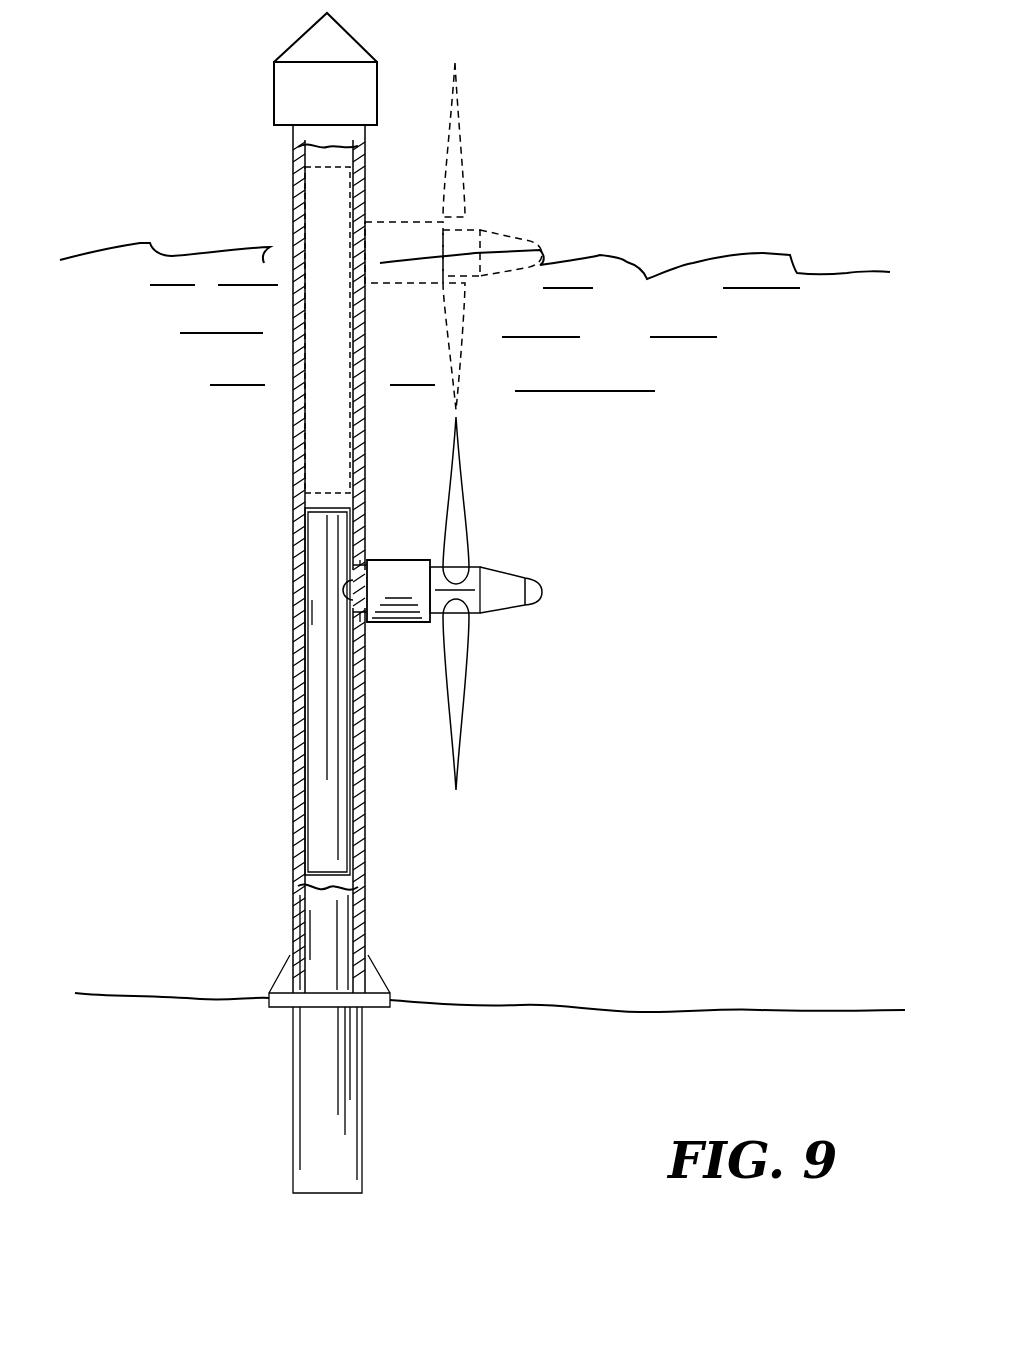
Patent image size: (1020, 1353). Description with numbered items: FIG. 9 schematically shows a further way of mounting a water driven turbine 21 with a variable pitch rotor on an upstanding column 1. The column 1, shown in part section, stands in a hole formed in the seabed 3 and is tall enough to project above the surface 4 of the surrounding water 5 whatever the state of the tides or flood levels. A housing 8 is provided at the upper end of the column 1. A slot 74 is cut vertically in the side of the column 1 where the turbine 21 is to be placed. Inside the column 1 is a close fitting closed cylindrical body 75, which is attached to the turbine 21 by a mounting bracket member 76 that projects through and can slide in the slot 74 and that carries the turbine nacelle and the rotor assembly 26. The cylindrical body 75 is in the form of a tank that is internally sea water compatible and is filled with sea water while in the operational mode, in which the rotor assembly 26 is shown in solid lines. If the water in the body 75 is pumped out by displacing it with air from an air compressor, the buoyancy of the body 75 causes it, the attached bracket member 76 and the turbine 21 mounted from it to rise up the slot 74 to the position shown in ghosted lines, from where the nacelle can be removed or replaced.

The column 1 is at (293, 448).
The seabed 3 is at (497, 1105).
The surface 4 is at (133, 240).
The water 5 is at (130, 614).
The housing 8 is at (274, 97).
The turbine 21 is at (410, 646).
The rotor assembly 26 is at (500, 644).
The slot 74 is at (365, 527).
The cylindrical body 75 is at (325, 303).
The mounting bracket member 76 is at (343, 586).